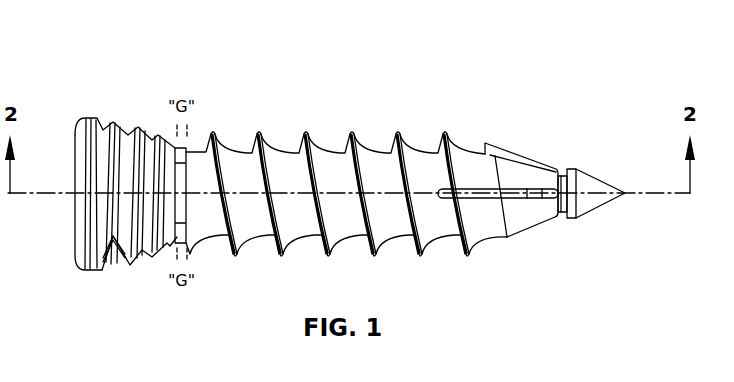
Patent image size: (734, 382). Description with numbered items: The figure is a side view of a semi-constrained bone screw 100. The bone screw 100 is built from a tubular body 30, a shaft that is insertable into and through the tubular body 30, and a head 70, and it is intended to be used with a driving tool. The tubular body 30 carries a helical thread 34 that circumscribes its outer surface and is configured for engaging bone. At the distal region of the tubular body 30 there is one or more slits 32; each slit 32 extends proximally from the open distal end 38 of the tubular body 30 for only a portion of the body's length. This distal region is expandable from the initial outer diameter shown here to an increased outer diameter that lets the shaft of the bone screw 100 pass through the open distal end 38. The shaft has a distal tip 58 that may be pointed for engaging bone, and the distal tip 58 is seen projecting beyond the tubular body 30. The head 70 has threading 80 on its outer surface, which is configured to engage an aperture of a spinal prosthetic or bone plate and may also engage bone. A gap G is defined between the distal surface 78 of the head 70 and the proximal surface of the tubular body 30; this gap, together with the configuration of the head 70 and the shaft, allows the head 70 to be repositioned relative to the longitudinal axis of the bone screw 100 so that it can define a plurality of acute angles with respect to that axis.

The semi-constrained bone screw 100 is at (247, 92).
The head 70 is at (96, 103).
The distal surface 78 is at (178, 145).
The threading 80 is at (125, 267).
The tubular body 30 is at (368, 124).
The helical thread 34 is at (282, 257).
The slit 32 is at (486, 200).
The open distal end 38 is at (562, 217).
The distal tip 58 is at (598, 178).